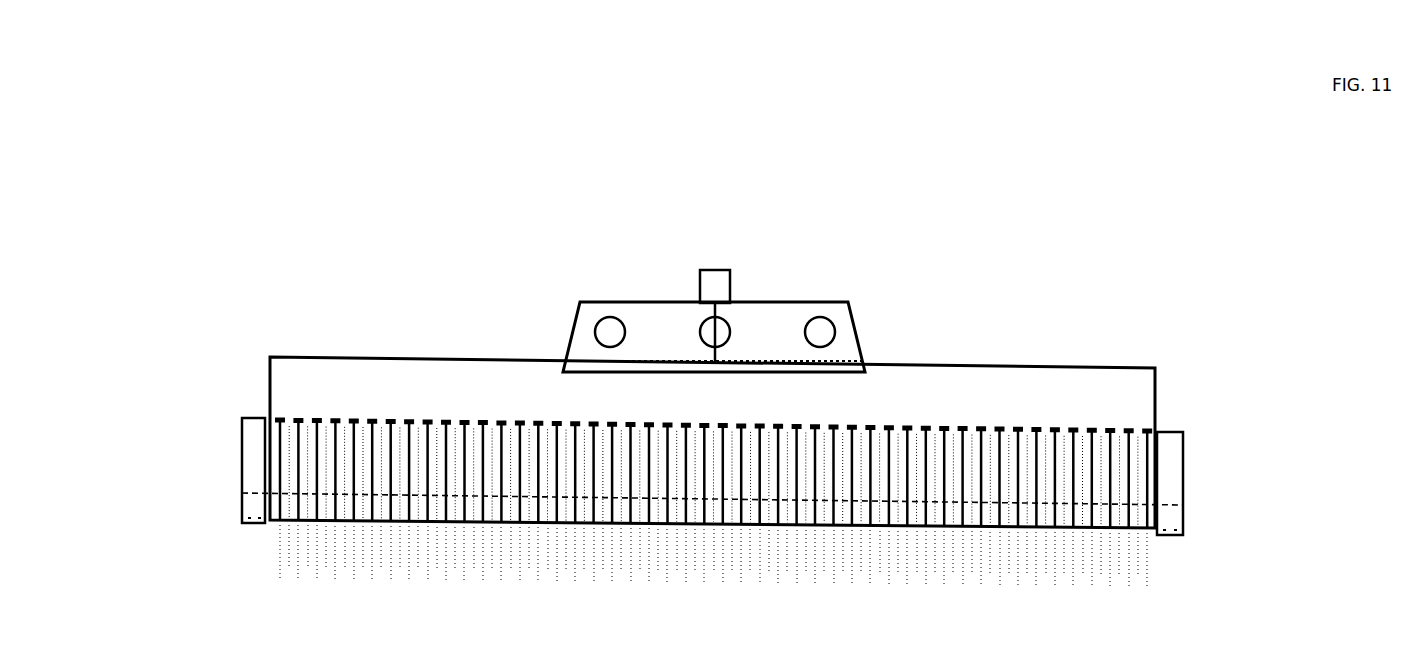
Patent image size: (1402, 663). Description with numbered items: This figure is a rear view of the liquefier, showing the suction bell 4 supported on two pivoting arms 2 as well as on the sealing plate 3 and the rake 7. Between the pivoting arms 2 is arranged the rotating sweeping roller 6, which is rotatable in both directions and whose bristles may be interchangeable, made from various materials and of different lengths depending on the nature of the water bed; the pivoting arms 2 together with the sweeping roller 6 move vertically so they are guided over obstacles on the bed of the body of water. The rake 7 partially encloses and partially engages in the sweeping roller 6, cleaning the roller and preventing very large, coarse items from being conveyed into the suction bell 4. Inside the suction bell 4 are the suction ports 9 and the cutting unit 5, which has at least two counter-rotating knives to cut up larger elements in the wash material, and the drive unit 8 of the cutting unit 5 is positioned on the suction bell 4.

The pivoting arm 2 is at (1172, 472).
The sealing plate 3 is at (1117, 430).
The suction bell 4 is at (890, 365).
The cutting unit 5 is at (743, 362).
The sweeping roller 6 is at (285, 548).
The rake 7 is at (467, 420).
The drive unit 8 is at (717, 268).
The suction port 9 is at (608, 318).